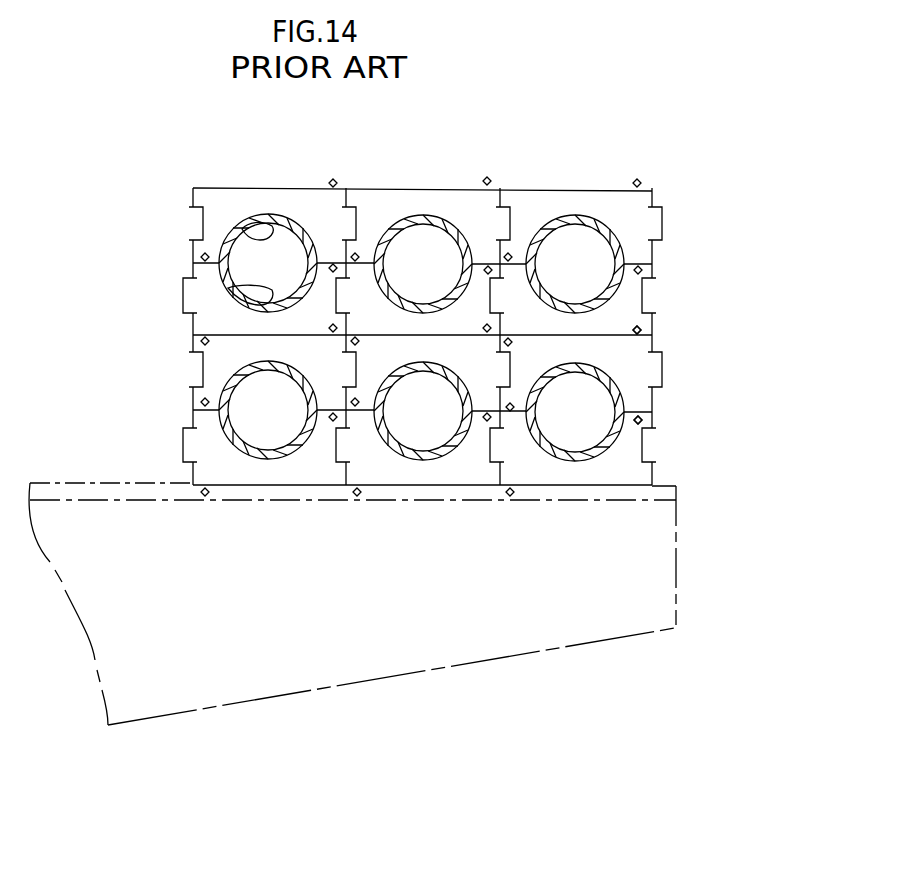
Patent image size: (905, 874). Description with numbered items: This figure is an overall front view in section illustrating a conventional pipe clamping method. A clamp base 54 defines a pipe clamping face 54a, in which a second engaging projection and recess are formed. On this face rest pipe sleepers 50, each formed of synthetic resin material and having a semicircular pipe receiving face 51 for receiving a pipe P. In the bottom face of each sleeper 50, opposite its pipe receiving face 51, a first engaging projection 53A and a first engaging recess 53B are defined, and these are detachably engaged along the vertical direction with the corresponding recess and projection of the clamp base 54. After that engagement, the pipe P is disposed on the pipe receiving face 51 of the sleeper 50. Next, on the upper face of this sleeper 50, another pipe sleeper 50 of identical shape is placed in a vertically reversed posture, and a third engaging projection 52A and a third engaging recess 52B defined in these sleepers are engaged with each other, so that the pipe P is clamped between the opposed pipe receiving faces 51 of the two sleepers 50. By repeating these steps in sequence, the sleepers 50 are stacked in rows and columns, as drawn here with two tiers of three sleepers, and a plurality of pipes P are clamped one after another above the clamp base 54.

The pipe sleeper 50 is at (270, 193).
The pipe receiving face 51 is at (240, 227).
The first engaging projection 53A is at (333, 183).
The first engaging recess 53B is at (648, 336).
The third engaging projection 52A is at (650, 424).
The third engaging recess 52B is at (650, 424).
The pipe P is at (558, 215).
The clamp base 54 is at (678, 583).
The pipe clamping face 54a is at (105, 483).